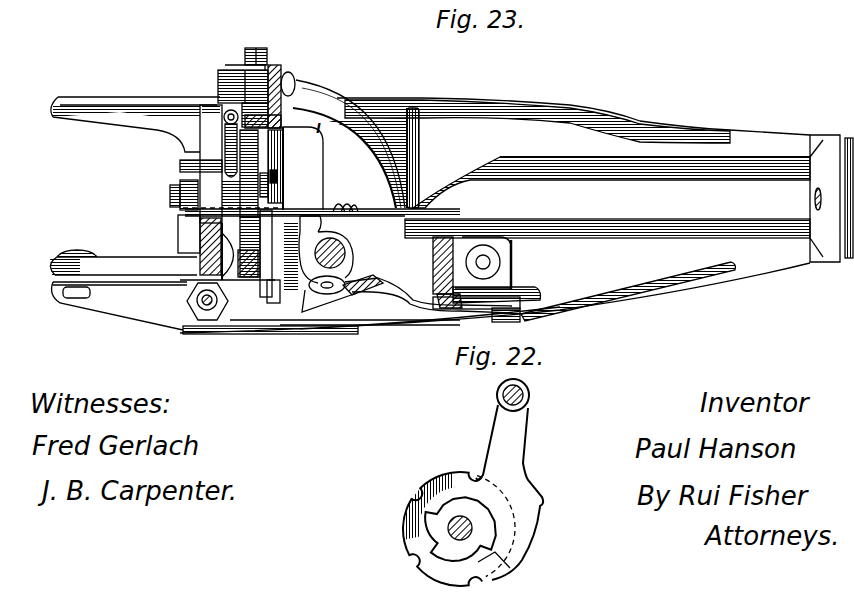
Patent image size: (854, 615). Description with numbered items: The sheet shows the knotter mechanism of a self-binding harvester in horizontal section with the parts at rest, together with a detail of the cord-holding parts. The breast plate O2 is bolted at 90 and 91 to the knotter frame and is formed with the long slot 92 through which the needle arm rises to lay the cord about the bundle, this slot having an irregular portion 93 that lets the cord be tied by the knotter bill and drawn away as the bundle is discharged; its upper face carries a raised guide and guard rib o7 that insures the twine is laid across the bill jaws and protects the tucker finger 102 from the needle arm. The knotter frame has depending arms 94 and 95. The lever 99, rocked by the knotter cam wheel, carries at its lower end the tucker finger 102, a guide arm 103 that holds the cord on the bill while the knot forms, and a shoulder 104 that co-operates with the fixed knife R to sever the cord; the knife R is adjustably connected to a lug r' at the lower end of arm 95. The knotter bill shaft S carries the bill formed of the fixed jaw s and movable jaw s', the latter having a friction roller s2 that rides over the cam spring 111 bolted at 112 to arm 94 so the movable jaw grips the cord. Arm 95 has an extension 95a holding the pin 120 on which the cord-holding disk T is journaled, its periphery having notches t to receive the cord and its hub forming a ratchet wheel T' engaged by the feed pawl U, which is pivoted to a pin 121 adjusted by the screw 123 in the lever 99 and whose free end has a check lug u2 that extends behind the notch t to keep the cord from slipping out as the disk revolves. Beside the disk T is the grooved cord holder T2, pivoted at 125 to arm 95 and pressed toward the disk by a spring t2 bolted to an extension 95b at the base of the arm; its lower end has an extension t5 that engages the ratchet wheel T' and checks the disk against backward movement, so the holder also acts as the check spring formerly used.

In FIG. 23, the pin 121 is at (218, 83).
In FIG. 23, the screw 123 is at (260, 58).
In FIG. 23, the lever 99 is at (296, 86).
In FIG. 23, the feed pawl U is at (222, 130).
In FIG. 23, the check lug u2 is at (205, 170).
In FIG. 23, the ratchet wheel T' is at (190, 160).
In FIG. 22, the ratchet wheel T' is at (503, 529).
In FIG. 23, the pin 120 is at (170, 193).
In FIG. 22, the pin 120 is at (473, 531).
In FIG. 23, the shoulder 104 is at (278, 172).
In FIG. 23, the guide arm 103 is at (326, 205).
In FIG. 23, the tucker finger 102 is at (378, 147).
In FIG. 23, the guide and guard rib o7 is at (419, 160).
In FIG. 23, the breast plate O2 is at (516, 215).
In FIG. 23, the long slot 92 is at (607, 197).
In FIG. 23, the movable jaw s' is at (357, 190).
In FIG. 23, the fixed jaw s is at (374, 195).
In FIG. 23, the irregular portion 93 is at (375, 240).
In FIG. 23, the arm 94 is at (435, 272).
In FIG. 23, the bolt 91 is at (513, 272).
In FIG. 23, the bolt 112 is at (520, 318).
In FIG. 23, the friction roller s2 is at (324, 293).
In FIG. 23, the cam spring 111 is at (352, 293).
In FIG. 23, the knotter bill shaft S is at (362, 300).
In FIG. 23, the cord-holding disk T is at (254, 263).
In FIG. 22, the cord-holding disk T is at (438, 529).
In FIG. 23, the cord holder T2 is at (245, 285).
In FIG. 22, the cord holder T2 is at (512, 466).
In FIG. 23, the knife R is at (265, 292).
In FIG. 23, the lug r' is at (268, 292).
In FIG. 23, the bolt 90 is at (200, 305).
In FIG. 23, the spring t2 is at (150, 285).
In FIG. 23, the extension 95b is at (107, 267).
In FIG. 23, the extension 95a is at (190, 232).
In FIG. 23, the arm 95 is at (205, 250).
In FIG. 22, the pivot 125 is at (530, 394).
In FIG. 22, the extension t5 is at (501, 556).
In FIG. 22, the notch t is at (416, 493).